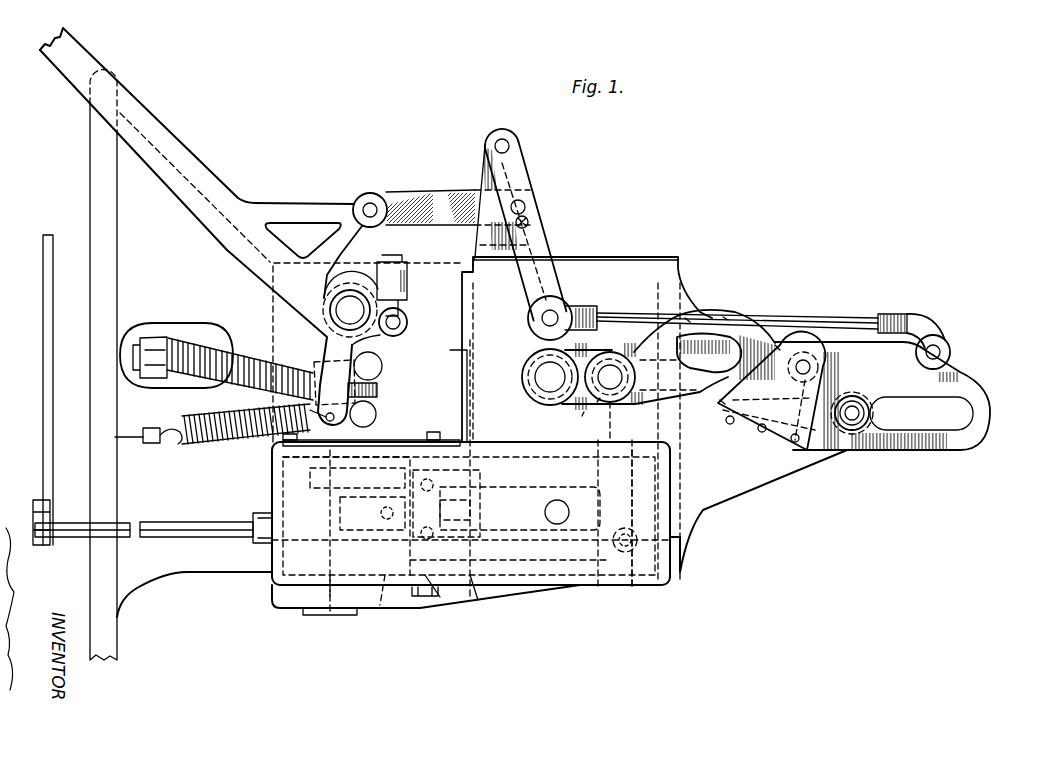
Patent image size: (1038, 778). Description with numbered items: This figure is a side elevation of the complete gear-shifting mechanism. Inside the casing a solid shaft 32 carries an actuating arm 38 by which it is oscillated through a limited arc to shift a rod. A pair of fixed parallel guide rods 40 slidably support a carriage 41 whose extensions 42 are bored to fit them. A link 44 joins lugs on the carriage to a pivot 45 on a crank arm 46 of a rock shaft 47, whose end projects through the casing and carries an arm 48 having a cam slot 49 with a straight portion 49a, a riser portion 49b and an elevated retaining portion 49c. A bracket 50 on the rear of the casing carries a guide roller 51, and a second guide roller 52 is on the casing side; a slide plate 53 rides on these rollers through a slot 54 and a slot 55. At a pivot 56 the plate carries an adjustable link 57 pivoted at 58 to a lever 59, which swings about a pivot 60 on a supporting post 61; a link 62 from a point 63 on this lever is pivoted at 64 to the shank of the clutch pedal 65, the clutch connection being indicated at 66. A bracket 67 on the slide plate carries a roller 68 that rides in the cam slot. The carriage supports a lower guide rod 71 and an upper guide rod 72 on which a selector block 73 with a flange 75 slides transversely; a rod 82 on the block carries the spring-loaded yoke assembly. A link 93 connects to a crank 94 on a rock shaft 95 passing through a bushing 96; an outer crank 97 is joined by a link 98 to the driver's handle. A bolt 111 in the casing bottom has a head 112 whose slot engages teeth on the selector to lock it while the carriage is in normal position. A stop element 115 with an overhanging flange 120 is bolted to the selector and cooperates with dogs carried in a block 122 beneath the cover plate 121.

The solid shaft 32 is at (557, 512).
The actuating arm 38 is at (517, 505).
The guide rods 40 is at (303, 600).
The carriage 41 is at (476, 594).
The extensions 42 is at (377, 605).
The link 44 is at (598, 555).
The pivotal connection 45 is at (633, 531).
The crank arm 46 is at (606, 448).
The rock shaft 47 is at (608, 385).
The arm 48 is at (724, 317).
The cam slot 49 is at (748, 341).
The straight portion 49a is at (778, 348).
The riser portion 49b is at (722, 405).
The elevated retaining portion 49c is at (698, 320).
The bracket 50 is at (752, 490).
The guide roller 51 is at (872, 413).
The second guide roller 52 is at (560, 402).
The slide plate 53 is at (524, 377).
The slot 54 is at (970, 413).
The slot 55 is at (583, 410).
The pivotal connection 56 is at (940, 350).
The adjustable link 57 is at (870, 316).
The pivotal connection 58 is at (553, 316).
The lever 59 is at (546, 250).
The pivot 60 is at (508, 143).
The supporting post 61 is at (478, 158).
The link 62 is at (424, 198).
The pivot point 63 is at (525, 206).
The pivotal connection 64 is at (372, 204).
The clutch pedal 65 is at (205, 172).
The clutch connection 66 is at (240, 352).
The bracket 67 is at (787, 418).
The roller 68 is at (796, 373).
The lower guide rod 71 is at (426, 525).
The upper guide rod 72 is at (450, 467).
The selector block 73 is at (467, 447).
The flange 75 is at (490, 485).
The rod 82 is at (380, 514).
The link 93 is at (346, 528).
The crank 94 is at (329, 608).
The rock shaft 95 is at (178, 530).
The bushing 96 is at (254, 538).
The crank 97 is at (36, 508).
The link 98 is at (43, 414).
The bolt 111 is at (426, 598).
The head 112 is at (444, 598).
The stop element 115 is at (335, 497).
The overhanging flange 120 is at (400, 440).
The cover plate 121 is at (378, 440).
The block 122 is at (330, 477).